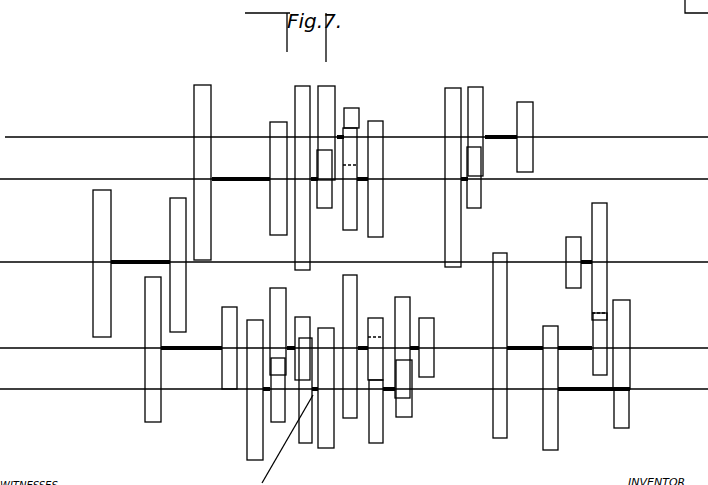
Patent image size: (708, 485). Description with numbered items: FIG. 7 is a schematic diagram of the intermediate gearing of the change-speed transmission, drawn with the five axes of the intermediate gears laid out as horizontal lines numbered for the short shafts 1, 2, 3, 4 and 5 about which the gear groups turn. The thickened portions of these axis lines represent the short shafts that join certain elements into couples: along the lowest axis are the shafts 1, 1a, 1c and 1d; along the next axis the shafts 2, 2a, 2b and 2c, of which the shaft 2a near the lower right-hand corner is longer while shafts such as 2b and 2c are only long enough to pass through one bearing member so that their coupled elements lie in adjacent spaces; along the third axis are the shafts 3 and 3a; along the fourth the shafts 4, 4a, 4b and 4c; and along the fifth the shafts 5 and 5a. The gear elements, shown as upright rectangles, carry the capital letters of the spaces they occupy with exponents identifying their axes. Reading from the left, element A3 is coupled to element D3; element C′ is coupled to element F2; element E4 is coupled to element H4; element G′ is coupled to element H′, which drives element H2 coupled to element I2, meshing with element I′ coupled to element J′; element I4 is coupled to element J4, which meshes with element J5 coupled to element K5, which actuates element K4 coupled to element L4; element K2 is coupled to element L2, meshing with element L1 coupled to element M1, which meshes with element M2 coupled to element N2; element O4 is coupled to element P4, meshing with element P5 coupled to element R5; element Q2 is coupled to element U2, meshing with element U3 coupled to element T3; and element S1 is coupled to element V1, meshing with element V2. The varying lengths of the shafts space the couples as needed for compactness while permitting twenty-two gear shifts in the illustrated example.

The short shaft 5 is at (499, 102).
The short shaft 4 is at (233, 163).
The short shaft 3 is at (125, 266).
The short shaft 2 is at (194, 345).
The short shaft 1 is at (578, 346).
The short shaft 5a is at (340, 137).
The short shaft 4a is at (462, 172).
The short shaft 4b is at (362, 180).
The short shaft 4c is at (313, 180).
The short shaft 3a is at (587, 262).
The short shaft 2a is at (523, 347).
The short shaft 2b is at (415, 350).
The short shaft 2c is at (362, 348).
The short shaft 1a is at (390, 396).
The short shaft 1c is at (265, 392).
The shaft 1 section 1d is at (288, 348).
The intermediate gear element E4 is at (212, 221).
The intermediate gear element H4 is at (272, 128).
The intermediate gear element I4 is at (300, 272).
The intermediate gear element J5 is at (329, 92).
The intermediate gear element J4 is at (326, 204).
The intermediate gear element K5 is at (348, 113).
The intermediate gear element K4 is at (350, 232).
The intermediate gear element L4 is at (376, 238).
The intermediate gear element O4 is at (457, 244).
The intermediate gear element P5 is at (478, 90).
The intermediate gear element P4 is at (483, 203).
The intermediate gear element R5 is at (527, 113).
The intermediate gear element A3 is at (93, 290).
The intermediate gear element D3 is at (170, 235).
The intermediate gear element T3 is at (575, 240).
The intermediate gear element U3 is at (596, 232).
The intermediate gear element U2 is at (599, 363).
The intermediate gear element V2 is at (631, 311).
The intermediate gear element V1 is at (620, 429).
The intermediate gear element Q2 is at (504, 290).
The intermediate gear element S1 is at (551, 451).
The intermediate gear element C′ is at (155, 412).
The intermediate gear element F2 is at (229, 382).
The intermediate gear element G′ is at (248, 437).
The intermediate gear element H2 is at (278, 298).
The intermediate gear element H′ is at (282, 426).
The intermediate gear element I2 is at (299, 333).
The intermediate gear element I′ is at (302, 446).
The intermediate gear element J′ is at (325, 450).
The intermediate gear element K2 is at (351, 420).
The intermediate gear element L2 is at (377, 318).
The intermediate gear element L1 is at (376, 445).
The intermediate gear element M2 is at (402, 302).
The intermediate gear element M1 is at (410, 420).
The intermediate gear element N2 is at (430, 320).